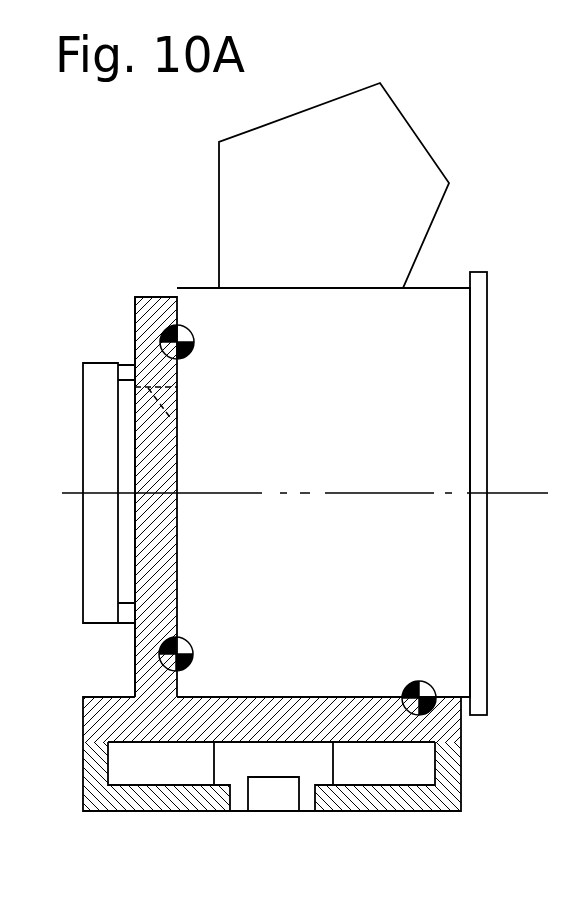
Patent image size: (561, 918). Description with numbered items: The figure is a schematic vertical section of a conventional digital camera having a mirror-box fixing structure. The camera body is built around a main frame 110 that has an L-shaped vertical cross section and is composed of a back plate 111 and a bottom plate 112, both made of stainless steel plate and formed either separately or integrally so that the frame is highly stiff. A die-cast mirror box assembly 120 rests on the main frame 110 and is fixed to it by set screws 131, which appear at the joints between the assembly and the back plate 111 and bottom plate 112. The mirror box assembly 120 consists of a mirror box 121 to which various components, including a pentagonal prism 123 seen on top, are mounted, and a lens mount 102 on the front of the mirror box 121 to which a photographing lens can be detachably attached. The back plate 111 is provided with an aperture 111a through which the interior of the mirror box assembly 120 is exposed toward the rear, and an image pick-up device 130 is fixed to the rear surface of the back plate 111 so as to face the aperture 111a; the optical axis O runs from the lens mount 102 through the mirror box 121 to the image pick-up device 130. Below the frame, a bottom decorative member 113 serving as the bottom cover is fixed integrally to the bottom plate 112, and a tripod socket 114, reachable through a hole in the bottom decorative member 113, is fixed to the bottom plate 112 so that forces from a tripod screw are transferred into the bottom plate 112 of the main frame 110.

The lens mount 102 is at (478, 335).
The main frame 110 is at (124, 641).
The back plate 111 is at (152, 437).
The aperture 111a is at (180, 423).
The bottom plate 112 is at (152, 722).
The bottom decorative member 113 is at (418, 797).
The tripod socket 114 is at (238, 765).
The mirror box assembly 120 is at (439, 254).
The mirror box 121 is at (433, 477).
The pentagonal prism 123 is at (410, 168).
The image pick-up device 130 is at (89, 352).
The set screws 131 is at (195, 342).
The optical axis O is at (265, 492).